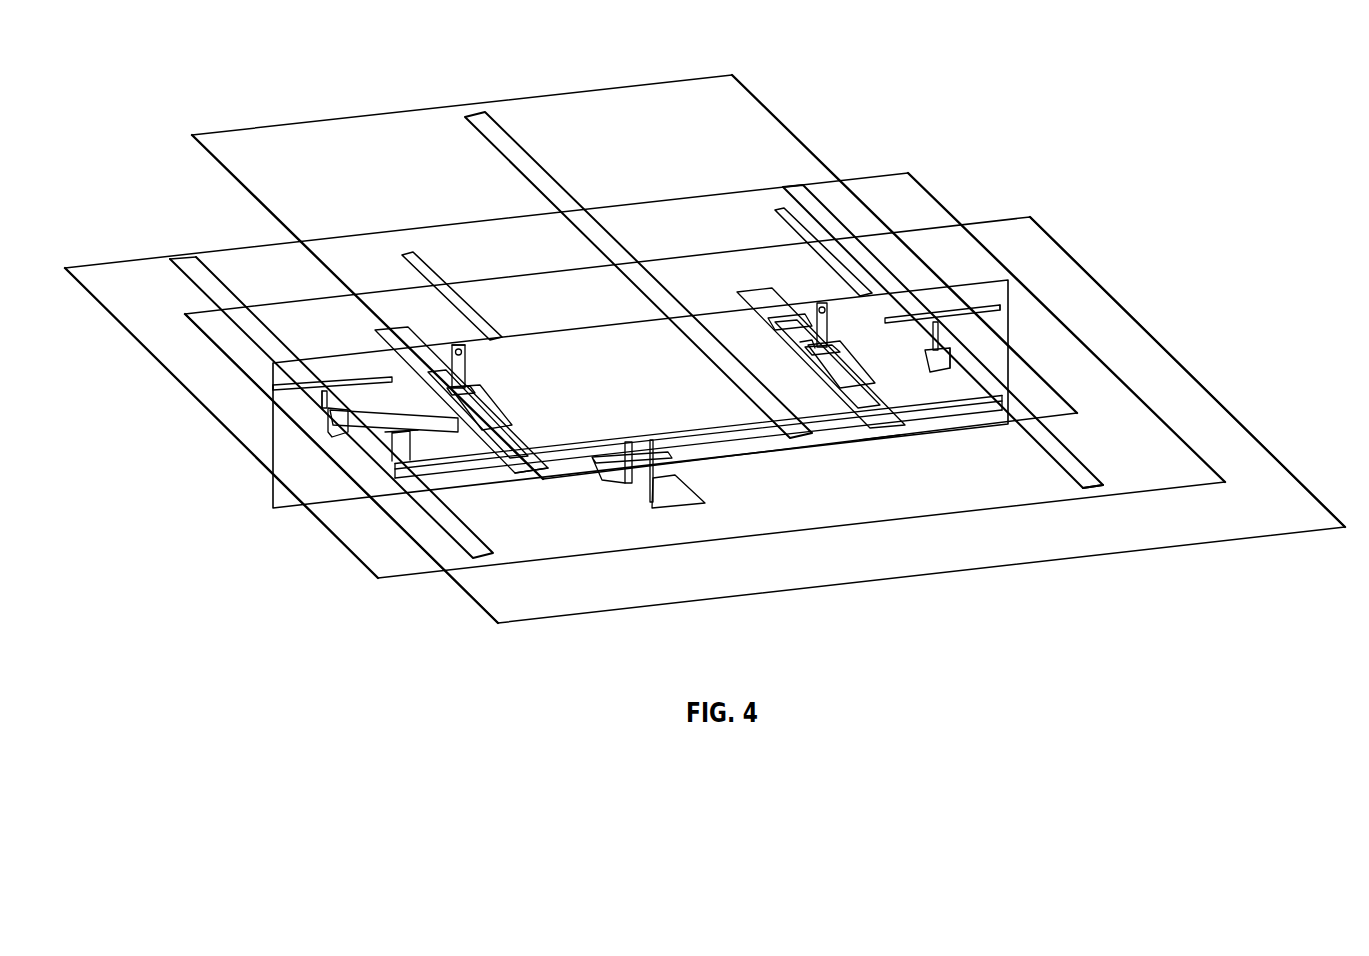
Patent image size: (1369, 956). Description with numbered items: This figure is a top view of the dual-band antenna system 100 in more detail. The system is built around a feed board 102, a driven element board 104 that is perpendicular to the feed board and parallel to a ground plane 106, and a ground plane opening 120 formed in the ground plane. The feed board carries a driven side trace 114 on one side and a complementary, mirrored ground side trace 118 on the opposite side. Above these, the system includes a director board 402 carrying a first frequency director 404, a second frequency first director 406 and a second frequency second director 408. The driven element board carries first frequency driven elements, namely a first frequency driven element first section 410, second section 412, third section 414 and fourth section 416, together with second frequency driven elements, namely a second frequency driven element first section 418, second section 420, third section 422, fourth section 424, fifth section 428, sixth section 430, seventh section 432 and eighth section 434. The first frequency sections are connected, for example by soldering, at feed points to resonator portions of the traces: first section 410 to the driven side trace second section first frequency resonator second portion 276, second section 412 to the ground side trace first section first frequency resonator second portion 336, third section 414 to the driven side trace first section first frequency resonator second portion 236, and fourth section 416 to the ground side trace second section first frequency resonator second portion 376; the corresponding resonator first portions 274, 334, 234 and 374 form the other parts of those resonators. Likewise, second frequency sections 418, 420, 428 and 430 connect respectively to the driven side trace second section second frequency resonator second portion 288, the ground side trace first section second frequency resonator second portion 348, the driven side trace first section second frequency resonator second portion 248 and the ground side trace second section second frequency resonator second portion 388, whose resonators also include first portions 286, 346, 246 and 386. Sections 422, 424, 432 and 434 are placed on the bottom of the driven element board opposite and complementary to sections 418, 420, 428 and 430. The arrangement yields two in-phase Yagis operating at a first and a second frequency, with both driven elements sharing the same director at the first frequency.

The dual-band antenna system 100 is at (878, 101).
The feed board 102 is at (270, 506).
The driven element board 104 is at (160, 257).
The ground plane 106 is at (845, 586).
The driven side trace 114 is at (575, 444).
The ground side trace 118 is at (552, 470).
The ground plane opening 120 is at (648, 500).
The driven side trace first section first frequency resonator first portion 234 is at (983, 305).
The driven side trace first section first frequency resonator second portion 236 is at (933, 348).
The driven side trace first section second frequency resonator first portion 246 is at (800, 326).
The driven side trace first section second frequency resonator second portion 248 is at (807, 344).
The driven side trace second section first frequency resonator first portion 274 is at (310, 387).
The driven side trace second section first frequency resonator second portion 276 is at (312, 400).
The driven side trace second section second frequency resonator first portion 286 is at (473, 340).
The driven side trace second section second frequency resonator second portion 288 is at (448, 381).
The ground side trace first section first frequency resonator first portion 334 is at (345, 384).
The ground side trace first section first frequency resonator second portion 336 is at (348, 408).
The ground side trace first section second frequency resonator first portion 346 is at (467, 357).
The ground side trace first section second frequency resonator second portion 348 is at (483, 396).
The ground side trace second section first frequency resonator first portion 374 is at (1008, 330).
The ground side trace second section first frequency resonator second portion 376 is at (1010, 338).
The ground side trace second section second frequency resonator first portion 386 is at (828, 330).
The ground side trace second section second frequency resonator second portion 388 is at (840, 351).
The director board 402 is at (703, 78).
The first frequency director 404 is at (526, 153).
The second frequency first director 406 is at (418, 270).
The second frequency second director 408 is at (778, 210).
The first frequency driven element first section 410 is at (180, 263).
The first frequency driven element second section 412 is at (428, 515).
The first frequency driven element third section 414 is at (792, 186).
The first frequency driven element fourth section 416 is at (1080, 472).
The second frequency driven element first section 418 is at (430, 368).
The second frequency driven element second section 420 is at (493, 413).
The second frequency driven element third section 422 is at (380, 332).
The second frequency driven element fourth section 424 is at (518, 476).
The second frequency driven element fifth section 428 is at (790, 325).
The second frequency driven element sixth section 430 is at (838, 368).
The second frequency driven element seventh section 432 is at (750, 292).
The second frequency driven element eighth section 434 is at (880, 430).